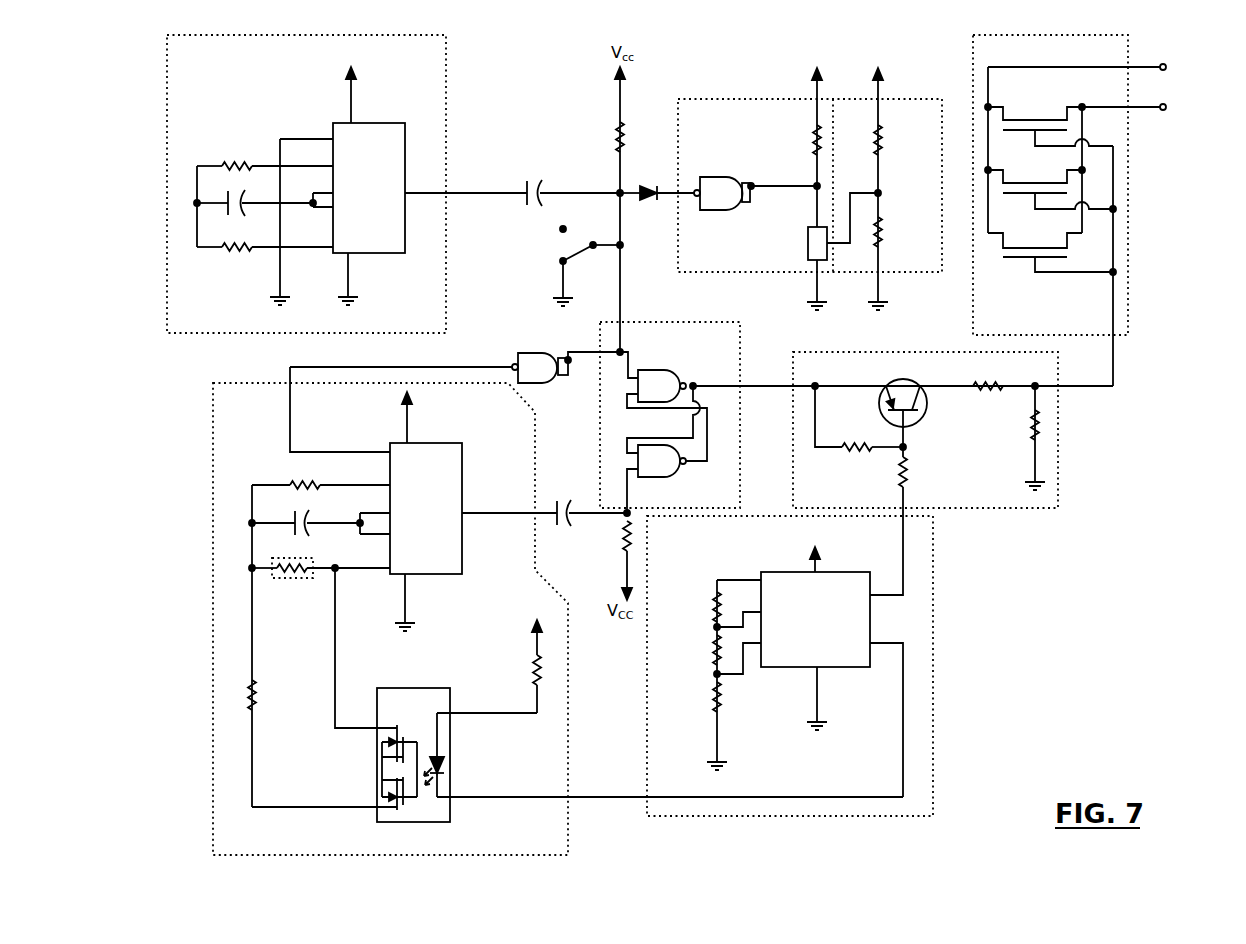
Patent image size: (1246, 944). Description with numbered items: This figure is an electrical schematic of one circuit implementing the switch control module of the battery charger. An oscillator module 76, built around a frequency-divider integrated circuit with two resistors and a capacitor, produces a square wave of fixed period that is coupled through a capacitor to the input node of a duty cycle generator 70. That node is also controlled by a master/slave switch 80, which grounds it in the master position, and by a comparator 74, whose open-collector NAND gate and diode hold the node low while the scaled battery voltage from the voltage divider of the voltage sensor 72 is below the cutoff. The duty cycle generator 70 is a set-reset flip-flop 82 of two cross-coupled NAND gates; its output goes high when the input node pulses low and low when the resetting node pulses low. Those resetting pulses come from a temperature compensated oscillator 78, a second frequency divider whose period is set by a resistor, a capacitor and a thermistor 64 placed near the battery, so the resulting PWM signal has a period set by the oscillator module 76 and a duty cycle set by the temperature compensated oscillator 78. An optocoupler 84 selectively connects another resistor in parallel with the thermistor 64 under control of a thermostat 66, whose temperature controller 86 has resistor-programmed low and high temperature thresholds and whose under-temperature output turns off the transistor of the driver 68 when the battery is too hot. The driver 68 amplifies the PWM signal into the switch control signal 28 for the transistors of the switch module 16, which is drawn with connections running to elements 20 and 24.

The switch module 16 is at (1128, 217).
The connection to node 20 is at (1149, 107).
The connection to node 24 is at (1102, 67).
The switch control signal 28 is at (1113, 355).
The thermistor 64 is at (297, 598).
The thermostat 66 is at (647, 692).
The driver 68 is at (1058, 492).
The duty cycle generator 70 is at (696, 322).
The voltage sensor 72 is at (914, 99).
The comparator 74 is at (738, 99).
The oscillator module 76 is at (446, 92).
The temperature compensated oscillator 78 is at (212, 522).
The master/slave switch 80 is at (574, 268).
The set-reset flip-flop 82 is at (641, 424).
The optocoupler 84 is at (417, 688).
The temperature controller 86 is at (774, 572).